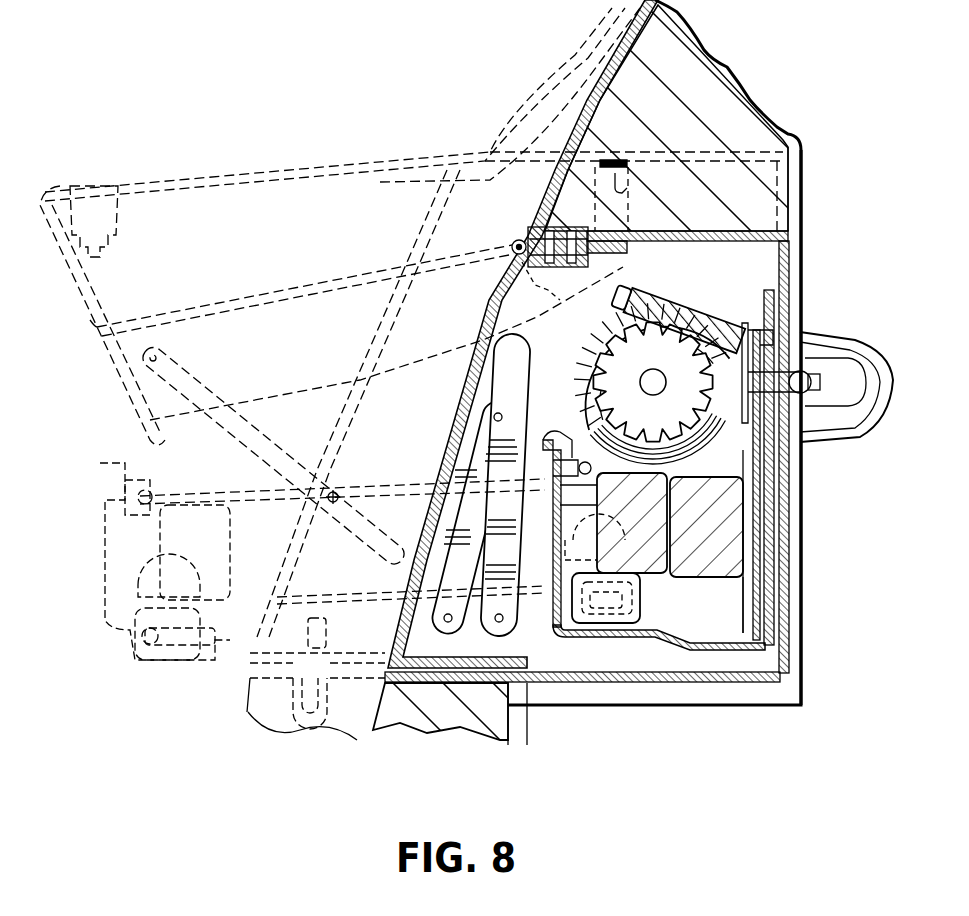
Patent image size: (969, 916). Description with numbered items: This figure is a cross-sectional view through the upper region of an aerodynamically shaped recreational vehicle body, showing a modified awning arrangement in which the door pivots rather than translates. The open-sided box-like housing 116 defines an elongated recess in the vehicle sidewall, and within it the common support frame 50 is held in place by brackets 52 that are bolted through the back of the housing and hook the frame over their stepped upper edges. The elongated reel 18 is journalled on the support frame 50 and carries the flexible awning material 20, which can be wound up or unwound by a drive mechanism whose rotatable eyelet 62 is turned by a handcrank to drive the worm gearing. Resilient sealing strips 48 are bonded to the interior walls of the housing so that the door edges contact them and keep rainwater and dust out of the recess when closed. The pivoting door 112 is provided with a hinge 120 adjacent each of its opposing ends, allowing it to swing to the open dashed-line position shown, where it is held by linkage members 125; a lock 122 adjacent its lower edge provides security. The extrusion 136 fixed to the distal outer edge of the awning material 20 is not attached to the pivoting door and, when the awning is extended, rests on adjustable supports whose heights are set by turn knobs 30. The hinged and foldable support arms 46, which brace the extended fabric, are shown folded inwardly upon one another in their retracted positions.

The reel 18 is at (712, 452).
The awning material 20 is at (360, 478).
The turn knobs 30 is at (205, 548).
The hinged and foldable support arms 46 is at (712, 496).
The resilient sealing strips 48 is at (625, 178).
The support frame 50 is at (740, 530).
The brackets 52 is at (762, 562).
The rotatable eyelet 62 is at (830, 335).
The pivoting door 112 is at (280, 284).
The housing 116 is at (782, 268).
The hinge 120 is at (512, 240).
The lock 122 is at (240, 640).
The linkage members 125 is at (238, 385).
The extrusion 136 is at (150, 480).